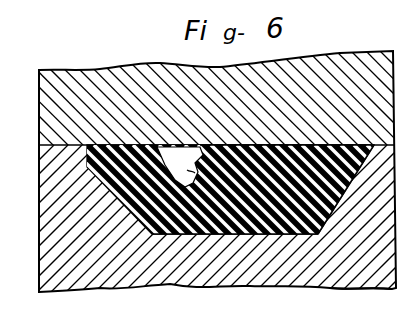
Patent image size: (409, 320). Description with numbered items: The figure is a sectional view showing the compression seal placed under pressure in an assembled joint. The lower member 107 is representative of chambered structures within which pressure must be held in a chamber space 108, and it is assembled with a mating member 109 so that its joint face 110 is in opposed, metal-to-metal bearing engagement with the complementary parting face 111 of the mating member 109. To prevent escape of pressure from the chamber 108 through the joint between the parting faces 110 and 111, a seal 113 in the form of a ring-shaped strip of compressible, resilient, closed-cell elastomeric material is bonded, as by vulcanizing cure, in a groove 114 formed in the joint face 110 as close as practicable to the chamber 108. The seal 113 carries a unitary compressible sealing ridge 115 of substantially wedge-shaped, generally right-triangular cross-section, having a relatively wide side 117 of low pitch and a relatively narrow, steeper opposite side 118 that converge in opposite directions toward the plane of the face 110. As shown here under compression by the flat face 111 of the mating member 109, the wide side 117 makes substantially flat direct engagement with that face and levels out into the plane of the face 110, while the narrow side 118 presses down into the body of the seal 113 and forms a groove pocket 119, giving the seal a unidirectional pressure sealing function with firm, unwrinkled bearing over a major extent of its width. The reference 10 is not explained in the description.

The article 10 is at (394, 287).
The member 107 is at (371, 277).
The chamber space 108 is at (39, 260).
The mating member 109 is at (358, 62).
The joint face 110 is at (75, 146).
The parting face 111 is at (78, 151).
The seal 113 is at (333, 215).
The groove 114 is at (205, 235).
The sealing ridge 115 is at (249, 104).
The wide side 117 is at (303, 121).
The narrow side 118 is at (300, 138).
The groove pocket 119 is at (180, 167).